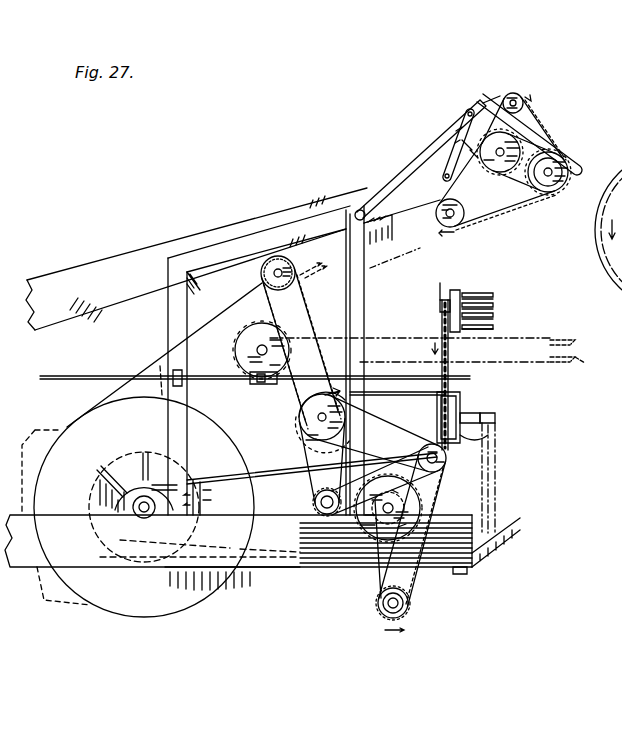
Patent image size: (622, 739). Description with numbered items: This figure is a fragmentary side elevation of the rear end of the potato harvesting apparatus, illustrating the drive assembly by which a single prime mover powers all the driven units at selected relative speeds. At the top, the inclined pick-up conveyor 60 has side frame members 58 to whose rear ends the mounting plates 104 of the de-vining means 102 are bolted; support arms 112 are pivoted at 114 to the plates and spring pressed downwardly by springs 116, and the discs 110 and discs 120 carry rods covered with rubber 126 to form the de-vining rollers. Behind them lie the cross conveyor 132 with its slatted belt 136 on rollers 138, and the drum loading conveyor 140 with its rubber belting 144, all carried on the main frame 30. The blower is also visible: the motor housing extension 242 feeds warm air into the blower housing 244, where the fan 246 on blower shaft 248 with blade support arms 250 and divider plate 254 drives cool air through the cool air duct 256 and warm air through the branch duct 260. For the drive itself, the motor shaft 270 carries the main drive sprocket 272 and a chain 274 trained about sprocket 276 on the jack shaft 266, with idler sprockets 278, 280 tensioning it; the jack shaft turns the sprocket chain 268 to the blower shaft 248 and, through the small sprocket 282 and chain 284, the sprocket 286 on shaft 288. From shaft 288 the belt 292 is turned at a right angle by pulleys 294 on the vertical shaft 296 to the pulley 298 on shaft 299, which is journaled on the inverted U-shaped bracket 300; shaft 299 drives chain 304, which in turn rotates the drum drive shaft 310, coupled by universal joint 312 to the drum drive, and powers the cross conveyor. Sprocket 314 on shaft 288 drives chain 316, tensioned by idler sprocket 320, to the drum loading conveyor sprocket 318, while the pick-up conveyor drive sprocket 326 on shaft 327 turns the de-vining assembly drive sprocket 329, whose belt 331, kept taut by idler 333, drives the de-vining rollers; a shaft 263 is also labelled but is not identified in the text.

The main frame 30 is at (41, 578).
The side frame members 58 is at (347, 203).
The pick-up conveyor 60 is at (50, 262).
The de-vining means 102 is at (466, 116).
The mounting plates 104 is at (462, 127).
The discs 110 is at (510, 176).
The support arms 112 is at (560, 148).
The pivotal connection 114 is at (533, 137).
The springs 116 is at (480, 102).
The discs 120 is at (538, 196).
The rubber covering 126 is at (470, 147).
The cross conveyor 132 is at (480, 293).
The slatted conveyor belt 136 is at (490, 313).
The rollers 138 is at (456, 291).
The drum loading conveyor 140 is at (530, 337).
The belting 144 is at (580, 350).
The motor housing extension 242 is at (160, 451).
The blower housing 244 is at (57, 462).
The fan 246 is at (92, 501).
The blower shaft 248 is at (143, 512).
The blade support arms 250 is at (140, 468).
The divider plate 254 is at (103, 515).
The cool air duct 256 is at (160, 366).
The branch duct 260 is at (62, 612).
The shaft 263 is at (48, 375).
The jack shaft 266 is at (377, 520).
The sprocket chain 268 is at (225, 450).
The motor shaft 270 is at (388, 603).
The main drive sprocket 272 is at (381, 614).
The chain 274 is at (420, 576).
The sprocket 276 is at (378, 514).
The idler sprocket 278 is at (313, 500).
The idler sprocket 280 is at (446, 463).
The small sprocket 282 is at (387, 557).
The chain 284 is at (380, 452).
The sprocket 286 is at (297, 406).
The shaft 288 is at (318, 417).
The belt 292 is at (410, 391).
The pulleys 294 is at (452, 392).
The vertical shaft 296 is at (489, 437).
The pulley 298 is at (461, 406).
The shaft 299 is at (496, 416).
The bracket 300 is at (492, 460).
The chain 304 is at (435, 281).
The drum drive shaft 310 is at (366, 378).
The universal joint 312 is at (242, 377).
The sprocket 314 is at (288, 398).
The chain 316 is at (322, 303).
The drum loading conveyor sprocket 318 is at (262, 322).
The idler sprocket 320 is at (272, 257).
The pick-up conveyor drive sprocket 326 is at (617, 282).
The shaft 327 is at (446, 231).
The de-vining assembly drive sprocket 329 is at (472, 225).
The belt 331 is at (532, 112).
The idler 333 is at (518, 93).